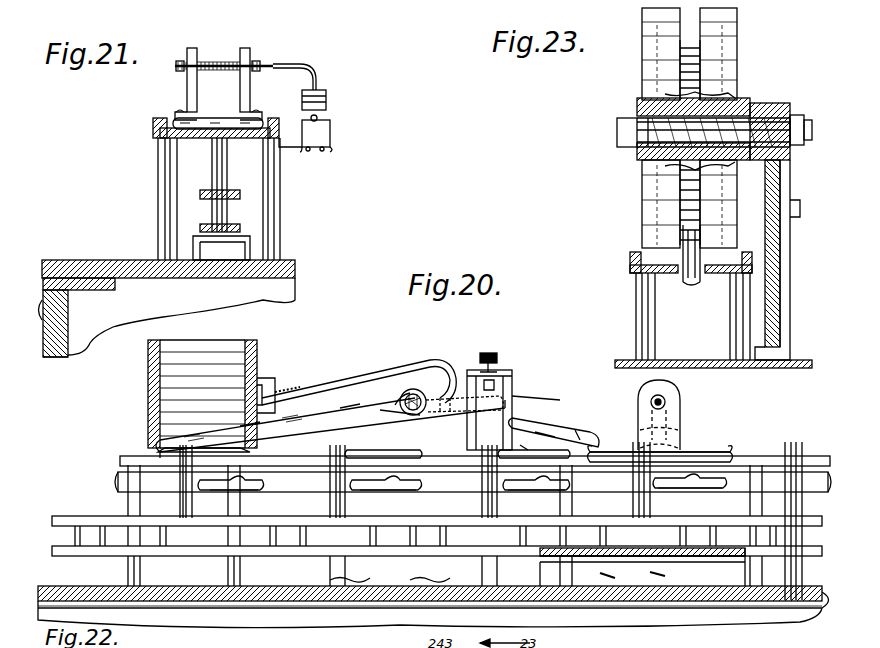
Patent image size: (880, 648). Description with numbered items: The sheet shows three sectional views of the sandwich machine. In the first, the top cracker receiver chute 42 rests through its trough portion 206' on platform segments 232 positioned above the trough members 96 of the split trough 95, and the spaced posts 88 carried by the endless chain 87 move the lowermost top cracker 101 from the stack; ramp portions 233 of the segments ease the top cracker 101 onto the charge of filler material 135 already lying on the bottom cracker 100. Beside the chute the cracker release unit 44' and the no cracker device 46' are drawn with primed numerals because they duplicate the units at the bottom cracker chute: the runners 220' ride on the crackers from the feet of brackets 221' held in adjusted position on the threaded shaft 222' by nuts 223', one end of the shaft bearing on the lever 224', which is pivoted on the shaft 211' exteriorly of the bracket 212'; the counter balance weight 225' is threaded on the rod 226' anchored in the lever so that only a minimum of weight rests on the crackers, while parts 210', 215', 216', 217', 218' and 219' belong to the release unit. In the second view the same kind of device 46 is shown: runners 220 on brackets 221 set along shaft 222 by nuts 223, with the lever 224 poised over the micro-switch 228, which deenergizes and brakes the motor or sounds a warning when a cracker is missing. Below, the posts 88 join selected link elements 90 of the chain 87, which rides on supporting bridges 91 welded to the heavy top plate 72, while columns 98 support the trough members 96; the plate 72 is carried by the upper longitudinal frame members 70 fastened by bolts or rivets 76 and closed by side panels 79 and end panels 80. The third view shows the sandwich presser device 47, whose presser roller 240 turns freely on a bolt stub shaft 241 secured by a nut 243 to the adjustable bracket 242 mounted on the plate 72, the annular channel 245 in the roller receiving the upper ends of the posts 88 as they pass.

In FIG. 20, the top cracker receiver chute 42 is at (146, 413).
In FIG. 20, the cracker release unit 44' is at (346, 342).
In FIG. 21, the no cracker device 46 is at (366, 86).
In FIG. 20, the no cracker device 46' is at (754, 412).
In FIG. 23, the sandwich presser device 47 is at (592, 105).
In FIG. 21, the upper longitudinal frame members 70 is at (72, 278).
In FIG. 20, the upper longitudinal frame members 70 is at (756, 612).
In FIG. 21, the top plate 72 is at (82, 262).
In FIG. 23, the top plate 72 is at (700, 358).
In FIG. 20, the top plate 72 is at (335, 600).
In FIG. 21, the bolts or rivets 76 is at (74, 305).
In FIG. 21, the side panels 79 is at (56, 355).
In FIG. 21, the end panels 80 is at (280, 292).
In FIG. 21, the endless chain 87 is at (242, 193).
In FIG. 20, the endless chain 87 is at (95, 550).
In FIG. 21, the posts 88 is at (212, 162).
In FIG. 23, the posts 88 is at (683, 272).
In FIG. 20, the posts 88 is at (180, 506).
In FIG. 21, the link elements 90 is at (200, 227).
In FIG. 20, the link elements 90 is at (350, 525).
In FIG. 21, the supporting bridges 91 is at (250, 238).
In FIG. 20, the supporting bridges 91 is at (625, 580).
In FIG. 21, the split trough 95 is at (156, 135).
In FIG. 23, the split trough 95 is at (627, 269).
In FIG. 20, the split trough 95 is at (116, 460).
In FIG. 21, the trough members 96 is at (158, 118).
In FIG. 23, the trough members 96 is at (631, 256).
In FIG. 20, the trough members 96 is at (116, 488).
In FIG. 21, the columns 98 is at (160, 238).
In FIG. 23, the columns 98 is at (637, 312).
In FIG. 20, the columns 98 is at (228, 570).
In FIG. 21, the bottom cracker 100 is at (205, 120).
In FIG. 20, the bottom cracker 100 is at (252, 490).
In FIG. 20, the top cracker 101 is at (200, 445).
In FIG. 20, the charge of filler material 135 is at (220, 482).
In FIG. 20, the trough portion 206' is at (174, 394).
In FIG. 20, the lever arm 210' is at (359, 376).
In FIG. 20, the shaft 211' is at (464, 381).
In FIG. 20, the bracket 212' is at (396, 395).
In FIG. 20, the lower arm 215' is at (330, 424).
In FIG. 20, the spring 216' is at (299, 377).
In FIG. 20, the link 217' is at (542, 398).
In FIG. 20, the adjusting screw 218' is at (512, 352).
In FIG. 20, the block 219' is at (453, 473).
In FIG. 21, the runners 220 is at (192, 103).
In FIG. 20, the runners 220' is at (673, 437).
In FIG. 21, the brackets 221 is at (218, 67).
In FIG. 20, the brackets 221' is at (683, 415).
In FIG. 21, the shaft 222 is at (320, 62).
In FIG. 20, the shaft 222' is at (688, 396).
In FIG. 21, the nuts 223 is at (245, 48).
In FIG. 20, the nuts 223' is at (626, 384).
In FIG. 21, the lever 224 is at (329, 82).
In FIG. 20, the lever 224' is at (554, 425).
In FIG. 20, the counter balance weight 225' is at (275, 378).
In FIG. 20, the rod 226' is at (495, 416).
In FIG. 21, the micro-switch 228 is at (320, 134).
In FIG. 20, the platform segments 232 is at (132, 455).
In FIG. 20, the ramp portions 233 is at (465, 458).
In FIG. 23, the presser roller 240 is at (728, 72).
In FIG. 23, the stub shaft 241 is at (620, 130).
In FIG. 23, the adjustable bracket 242 is at (790, 195).
In FIG. 23, the nut 243 is at (796, 115).
In FIG. 23, the annular channel 245 is at (690, 40).